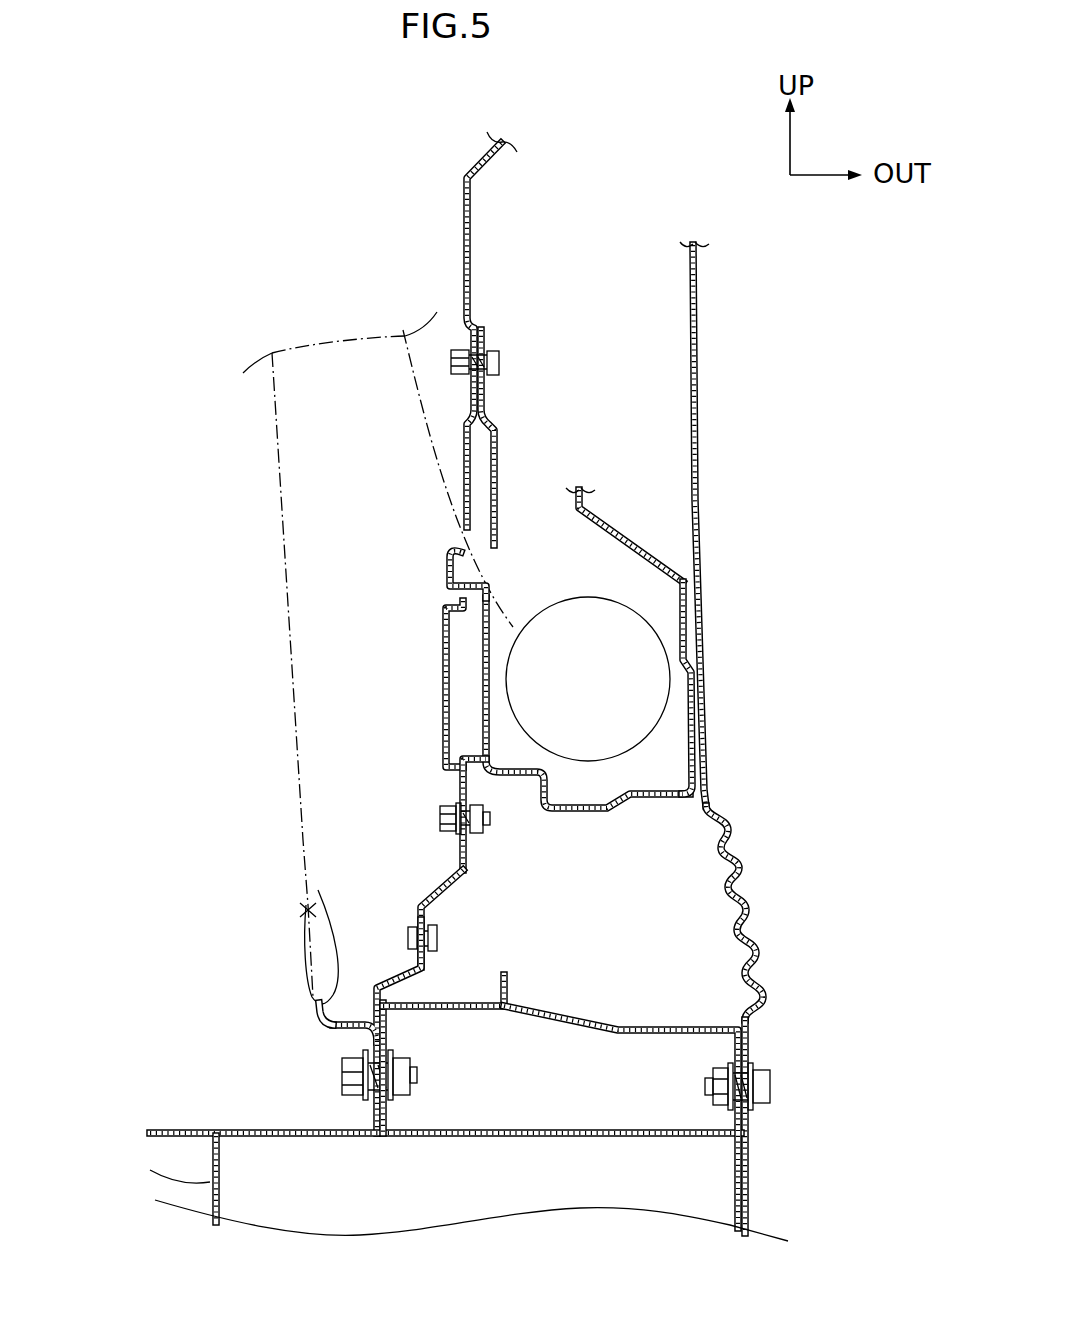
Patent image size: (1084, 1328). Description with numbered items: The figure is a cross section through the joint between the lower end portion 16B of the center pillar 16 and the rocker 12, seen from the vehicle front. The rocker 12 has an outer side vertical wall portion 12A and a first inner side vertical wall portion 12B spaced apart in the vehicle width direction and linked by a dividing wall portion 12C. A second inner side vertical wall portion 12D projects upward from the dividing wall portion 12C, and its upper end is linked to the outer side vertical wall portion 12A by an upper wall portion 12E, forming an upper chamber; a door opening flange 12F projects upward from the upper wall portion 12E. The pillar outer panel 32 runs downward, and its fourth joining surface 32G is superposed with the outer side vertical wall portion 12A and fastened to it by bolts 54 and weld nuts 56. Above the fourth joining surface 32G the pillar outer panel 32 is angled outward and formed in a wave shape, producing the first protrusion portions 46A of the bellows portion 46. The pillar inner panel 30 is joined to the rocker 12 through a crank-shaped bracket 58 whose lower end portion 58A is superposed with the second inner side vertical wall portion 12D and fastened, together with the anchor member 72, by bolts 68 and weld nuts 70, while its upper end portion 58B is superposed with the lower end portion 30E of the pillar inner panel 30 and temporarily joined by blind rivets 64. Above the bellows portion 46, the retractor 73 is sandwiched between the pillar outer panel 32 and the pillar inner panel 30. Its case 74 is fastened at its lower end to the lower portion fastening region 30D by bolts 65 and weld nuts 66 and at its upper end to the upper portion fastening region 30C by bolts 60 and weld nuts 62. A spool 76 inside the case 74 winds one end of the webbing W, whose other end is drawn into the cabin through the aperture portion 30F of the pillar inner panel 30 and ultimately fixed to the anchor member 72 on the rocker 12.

The rocker 12 is at (481, 1094).
The outer side vertical wall portion 12A is at (750, 1193).
The first inner side vertical wall portion 12B is at (214, 1178).
The dividing wall portion 12C is at (518, 1140).
The second inner side vertical wall portion 12D is at (388, 1100).
The upper wall portion 12E is at (663, 1037).
The door opening flange 12F is at (512, 985).
The center pillar 16 is at (800, 743).
The lower end portion 16B is at (729, 770).
The pillar inner panel 30 is at (514, 549).
The upper portion fastening region 30C is at (466, 327).
The lower portion fastening region 30D is at (455, 858).
The lower end portion 30E is at (430, 917).
The aperture portion 30F is at (452, 594).
The pillar outer panel 32 is at (708, 345).
The fourth joining surface 32G is at (751, 1136).
The bellows portion 46 is at (808, 905).
The first protrusion portions 46A is at (742, 868).
The bolts 54 is at (773, 1088).
The weld nuts 56 is at (726, 1067).
The bracket 58 is at (410, 1028).
The lower end portion 58A is at (430, 1004).
The upper end portion 58B is at (432, 955).
The bolts 60 is at (460, 377).
The weld nuts 62 is at (498, 345).
The blind rivets 64 is at (412, 928).
The bolts 65 is at (446, 808).
The weld nuts 66 is at (482, 832).
The bolts 68 is at (342, 1082).
The weld nuts 70 is at (412, 1060).
The anchor member 72 is at (318, 1027).
The retractor 73 is at (705, 641).
The case 74 is at (632, 537).
The spool 76 is at (723, 688).
The webbing W is at (266, 572).